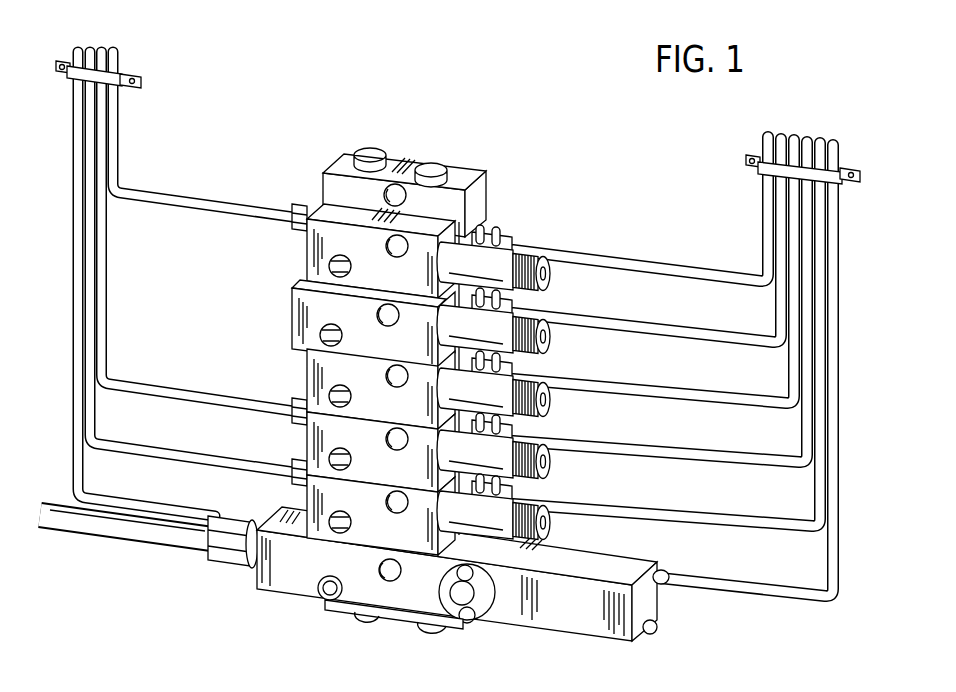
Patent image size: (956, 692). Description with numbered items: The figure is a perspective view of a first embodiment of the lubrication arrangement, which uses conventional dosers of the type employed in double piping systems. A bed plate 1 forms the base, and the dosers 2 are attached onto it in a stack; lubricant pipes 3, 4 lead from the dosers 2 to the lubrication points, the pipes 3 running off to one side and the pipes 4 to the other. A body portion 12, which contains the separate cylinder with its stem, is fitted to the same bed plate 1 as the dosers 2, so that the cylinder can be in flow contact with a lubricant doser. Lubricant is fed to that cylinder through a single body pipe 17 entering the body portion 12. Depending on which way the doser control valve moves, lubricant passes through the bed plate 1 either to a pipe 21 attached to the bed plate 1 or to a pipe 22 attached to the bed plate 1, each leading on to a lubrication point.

The bed plate 1 is at (470, 170).
The dosers 2 is at (300, 256).
The lubricant pipes 3 is at (203, 200).
The lubricant pipes 4 is at (673, 268).
The body portion 12 is at (543, 610).
The body pipe 17 is at (117, 527).
The pipe 21 is at (740, 588).
The pipe 22 is at (80, 422).